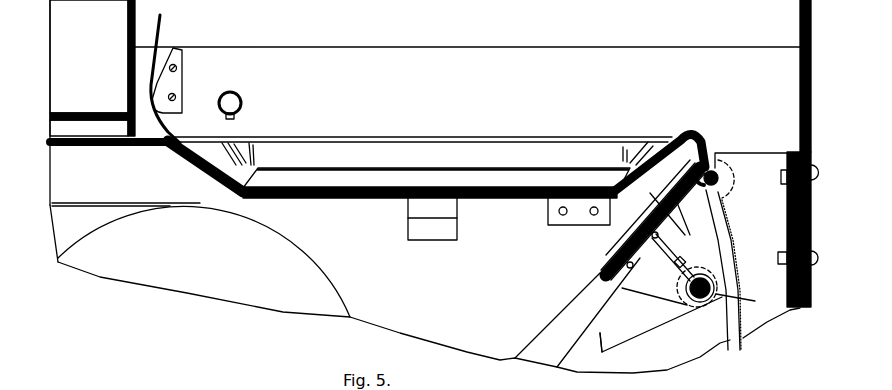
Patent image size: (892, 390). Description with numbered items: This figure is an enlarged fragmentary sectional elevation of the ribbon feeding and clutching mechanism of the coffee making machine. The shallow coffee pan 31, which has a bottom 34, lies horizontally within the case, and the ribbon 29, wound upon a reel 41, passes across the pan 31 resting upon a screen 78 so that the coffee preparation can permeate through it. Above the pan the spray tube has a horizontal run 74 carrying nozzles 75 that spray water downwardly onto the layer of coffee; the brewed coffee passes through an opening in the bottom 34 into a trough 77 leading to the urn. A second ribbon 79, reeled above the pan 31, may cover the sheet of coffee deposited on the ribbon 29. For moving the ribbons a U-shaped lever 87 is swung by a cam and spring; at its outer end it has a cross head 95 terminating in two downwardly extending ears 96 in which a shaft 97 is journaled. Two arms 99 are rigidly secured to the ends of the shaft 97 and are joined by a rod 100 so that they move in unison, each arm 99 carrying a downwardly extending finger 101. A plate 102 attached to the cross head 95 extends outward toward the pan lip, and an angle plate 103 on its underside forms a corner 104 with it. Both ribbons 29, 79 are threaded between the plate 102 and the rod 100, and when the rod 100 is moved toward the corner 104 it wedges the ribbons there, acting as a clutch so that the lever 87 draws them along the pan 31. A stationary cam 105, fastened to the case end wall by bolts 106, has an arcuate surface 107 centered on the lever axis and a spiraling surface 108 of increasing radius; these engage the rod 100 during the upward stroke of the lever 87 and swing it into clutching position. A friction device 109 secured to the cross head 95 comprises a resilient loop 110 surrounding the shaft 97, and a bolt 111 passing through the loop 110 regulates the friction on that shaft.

The ribbon 29 is at (141, 120).
The coffee pan 31 is at (403, 137).
The bottom 34 is at (482, 200).
The reel 41 is at (190, 289).
The horizontal run 74 is at (242, 100).
The nozzles 75 is at (242, 116).
The trough 77 is at (415, 210).
The screen 78 is at (322, 200).
The second ribbon 79 is at (162, 30).
The U-shaped lever 87 is at (556, 357).
The cross head 95 is at (600, 266).
The ears 96 is at (677, 303).
The shaft 97 is at (700, 305).
The arms 99 is at (739, 256).
The rod 100 is at (716, 181).
The finger 101 is at (598, 346).
The plate 102 is at (634, 249).
The angle plate 103 is at (674, 200).
The corner 104 is at (696, 172).
The stationary cam 105 is at (727, 150).
The bolts 106 is at (782, 170).
The arcuate surface 107 is at (727, 197).
The spiraling surface 108 is at (735, 253).
The friction device 109 is at (665, 258).
The loop 110 is at (752, 305).
The bolt 111 is at (677, 215).